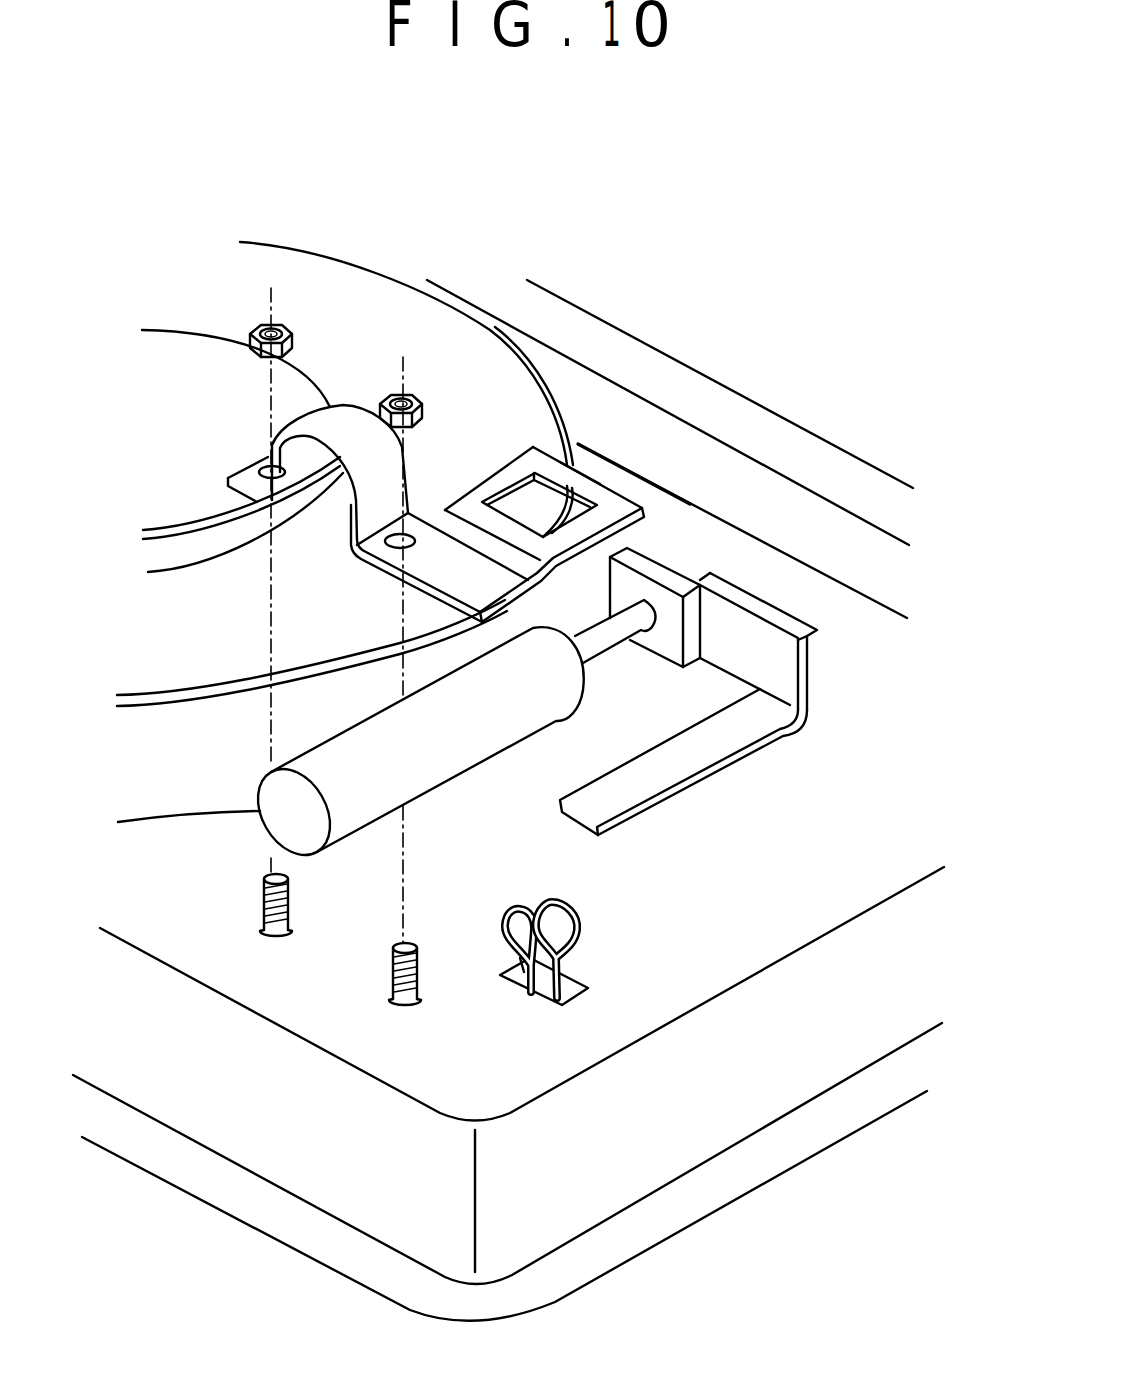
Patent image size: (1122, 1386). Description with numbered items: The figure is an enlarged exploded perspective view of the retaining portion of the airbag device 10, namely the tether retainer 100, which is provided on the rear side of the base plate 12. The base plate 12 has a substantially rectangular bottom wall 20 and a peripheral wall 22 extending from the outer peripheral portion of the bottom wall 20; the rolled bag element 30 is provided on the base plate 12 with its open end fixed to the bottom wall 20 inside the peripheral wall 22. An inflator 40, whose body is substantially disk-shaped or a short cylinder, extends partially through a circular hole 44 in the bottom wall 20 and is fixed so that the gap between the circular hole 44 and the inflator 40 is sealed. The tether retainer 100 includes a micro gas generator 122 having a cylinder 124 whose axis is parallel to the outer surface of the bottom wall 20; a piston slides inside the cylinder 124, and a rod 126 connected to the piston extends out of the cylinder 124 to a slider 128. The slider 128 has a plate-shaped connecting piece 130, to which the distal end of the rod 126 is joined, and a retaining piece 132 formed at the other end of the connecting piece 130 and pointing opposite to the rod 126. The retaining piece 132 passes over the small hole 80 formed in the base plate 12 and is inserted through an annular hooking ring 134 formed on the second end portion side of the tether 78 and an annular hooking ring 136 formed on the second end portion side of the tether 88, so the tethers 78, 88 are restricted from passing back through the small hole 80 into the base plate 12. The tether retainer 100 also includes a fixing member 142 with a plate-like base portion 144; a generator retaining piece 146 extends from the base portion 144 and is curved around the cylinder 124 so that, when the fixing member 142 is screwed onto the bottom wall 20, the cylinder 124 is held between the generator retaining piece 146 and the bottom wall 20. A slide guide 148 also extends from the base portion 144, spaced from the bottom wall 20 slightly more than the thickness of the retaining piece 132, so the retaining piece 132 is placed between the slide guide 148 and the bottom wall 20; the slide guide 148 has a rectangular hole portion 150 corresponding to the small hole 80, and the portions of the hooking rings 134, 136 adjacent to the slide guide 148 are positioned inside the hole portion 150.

The image forming apparatus frame 10 is at (703, 294).
The base plate 12 is at (508, 1100).
The bottom wall 20 is at (510, 1087).
The peripheral wall 22 is at (390, 1220).
The bag element 30 is at (283, 1216).
The inflator 40 is at (345, 551).
The circular hole 44 is at (170, 816).
The tether 78 is at (575, 918).
The small hole 80 is at (582, 982).
The tether 88 is at (516, 907).
The tether retainer 100 is at (614, 707).
The micro gas generator 122 is at (418, 766).
The cylinder 124 is at (351, 825).
The rod 126 is at (603, 647).
The slider 128 is at (751, 704).
The connecting piece 130 is at (678, 549).
The retaining piece 132 is at (753, 728).
The annular hooking ring 134 is at (555, 906).
The annular hooking ring 136 is at (504, 930).
The fixing member 142 is at (554, 502).
The base portion 144 is at (461, 551).
The generator retaining piece 146 is at (348, 415).
The slide guide 148 is at (603, 495).
The hole portion 150 is at (521, 478).